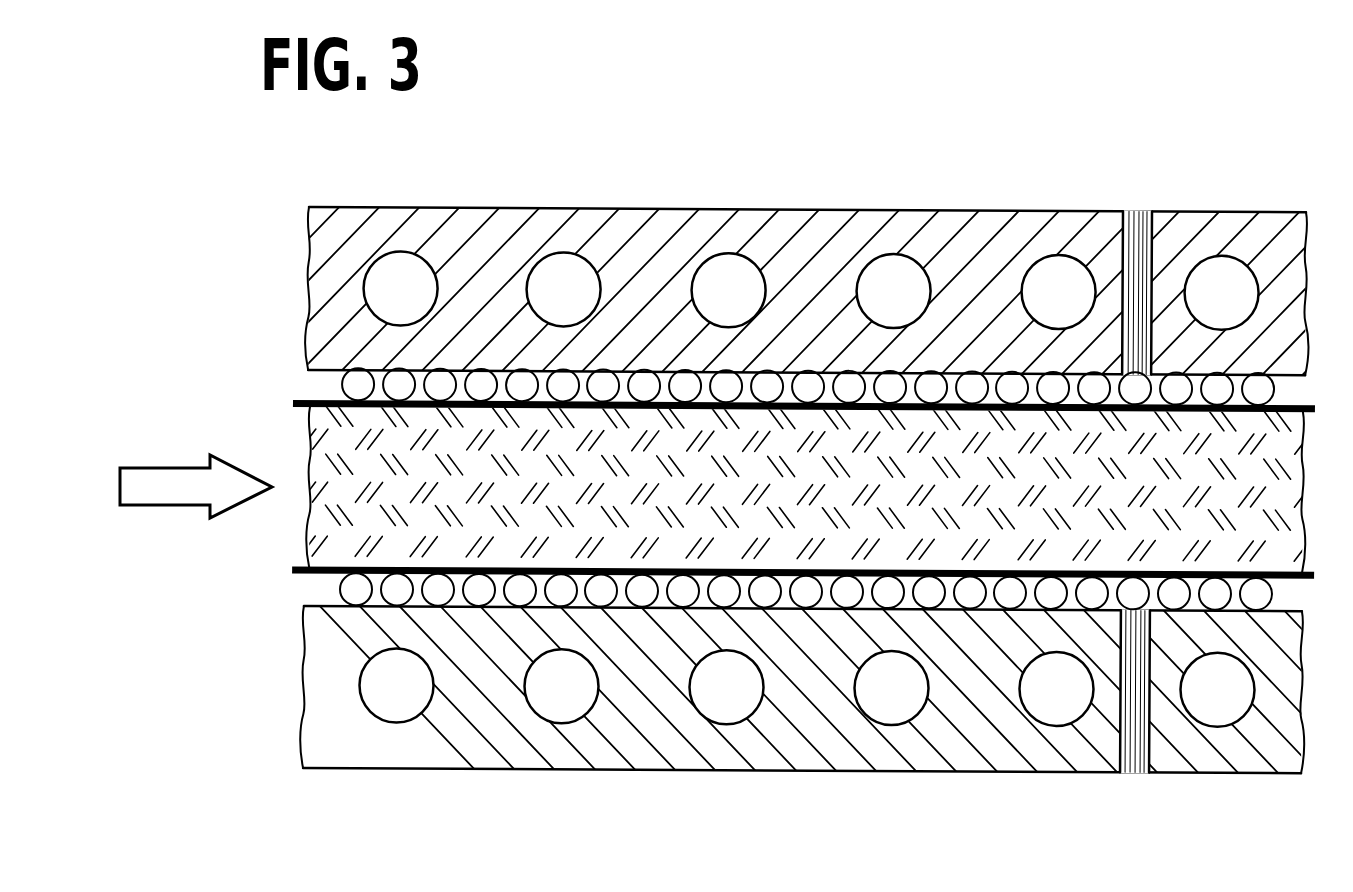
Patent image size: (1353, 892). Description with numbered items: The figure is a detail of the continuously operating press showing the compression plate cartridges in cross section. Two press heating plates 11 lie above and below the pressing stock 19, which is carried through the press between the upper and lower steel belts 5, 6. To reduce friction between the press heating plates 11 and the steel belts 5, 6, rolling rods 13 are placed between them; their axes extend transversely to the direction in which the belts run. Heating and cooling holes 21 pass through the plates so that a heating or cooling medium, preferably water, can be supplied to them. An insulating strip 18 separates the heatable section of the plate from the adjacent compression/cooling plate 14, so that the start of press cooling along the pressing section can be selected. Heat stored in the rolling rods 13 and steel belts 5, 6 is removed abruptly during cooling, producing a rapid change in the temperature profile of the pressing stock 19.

The steel belt 5 is at (293, 573).
The steel belt 6 is at (293, 401).
The press heating plate 11 is at (832, 250).
The rolling rods 13 is at (518, 383).
The compression/cooling plate 14 is at (1248, 255).
The insulating strip 18 is at (1137, 255).
The pressing stock 19 is at (1020, 462).
The heating and cooling holes 21 is at (728, 290).